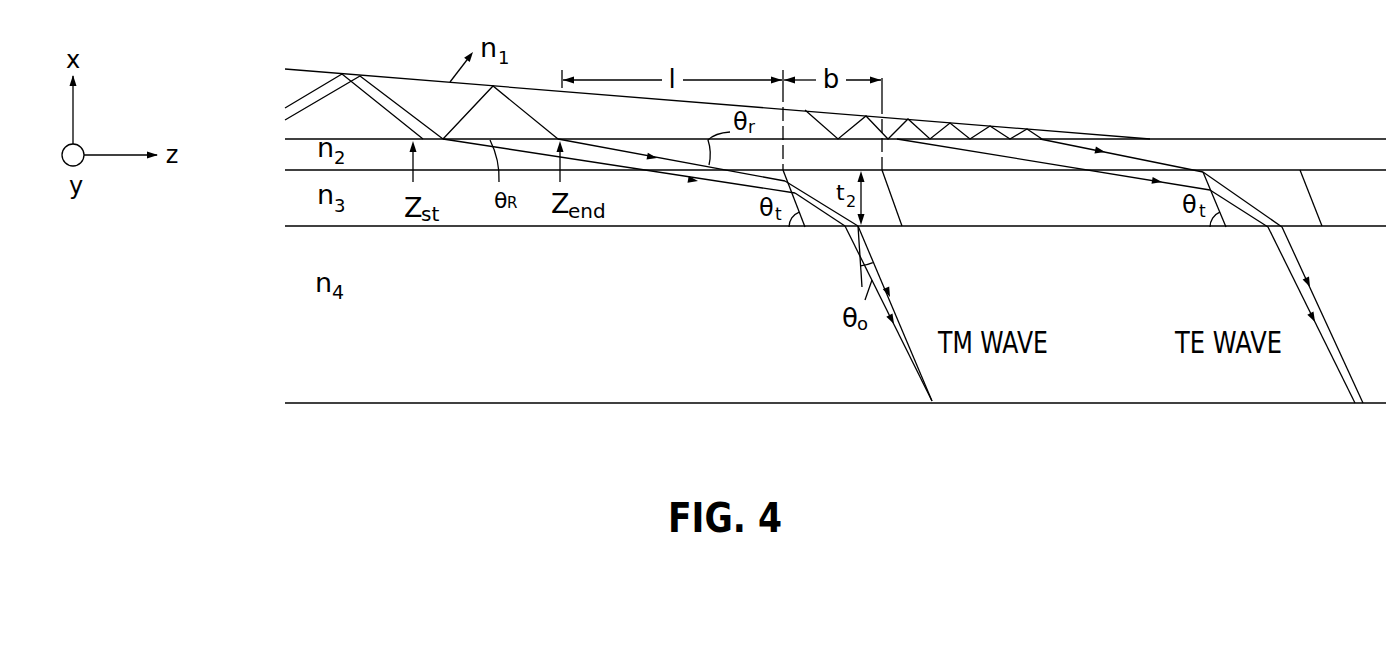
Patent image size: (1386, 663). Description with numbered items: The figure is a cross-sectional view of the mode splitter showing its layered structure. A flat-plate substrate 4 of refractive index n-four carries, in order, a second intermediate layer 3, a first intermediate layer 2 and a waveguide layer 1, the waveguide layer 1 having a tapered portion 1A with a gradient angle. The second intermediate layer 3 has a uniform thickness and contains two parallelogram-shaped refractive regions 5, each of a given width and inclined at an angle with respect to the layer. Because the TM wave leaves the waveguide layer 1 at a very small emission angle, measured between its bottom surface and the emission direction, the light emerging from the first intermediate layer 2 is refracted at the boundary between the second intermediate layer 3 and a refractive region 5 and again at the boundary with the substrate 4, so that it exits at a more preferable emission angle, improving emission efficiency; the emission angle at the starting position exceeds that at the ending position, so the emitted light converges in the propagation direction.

The waveguide layer 1 is at (297, 89).
The tapered portion 1A is at (970, 123).
The first intermediate layer 2 is at (302, 147).
The second intermediate layer 3 is at (302, 201).
The substrate 4 is at (317, 327).
The refractive region 5 is at (887, 205).